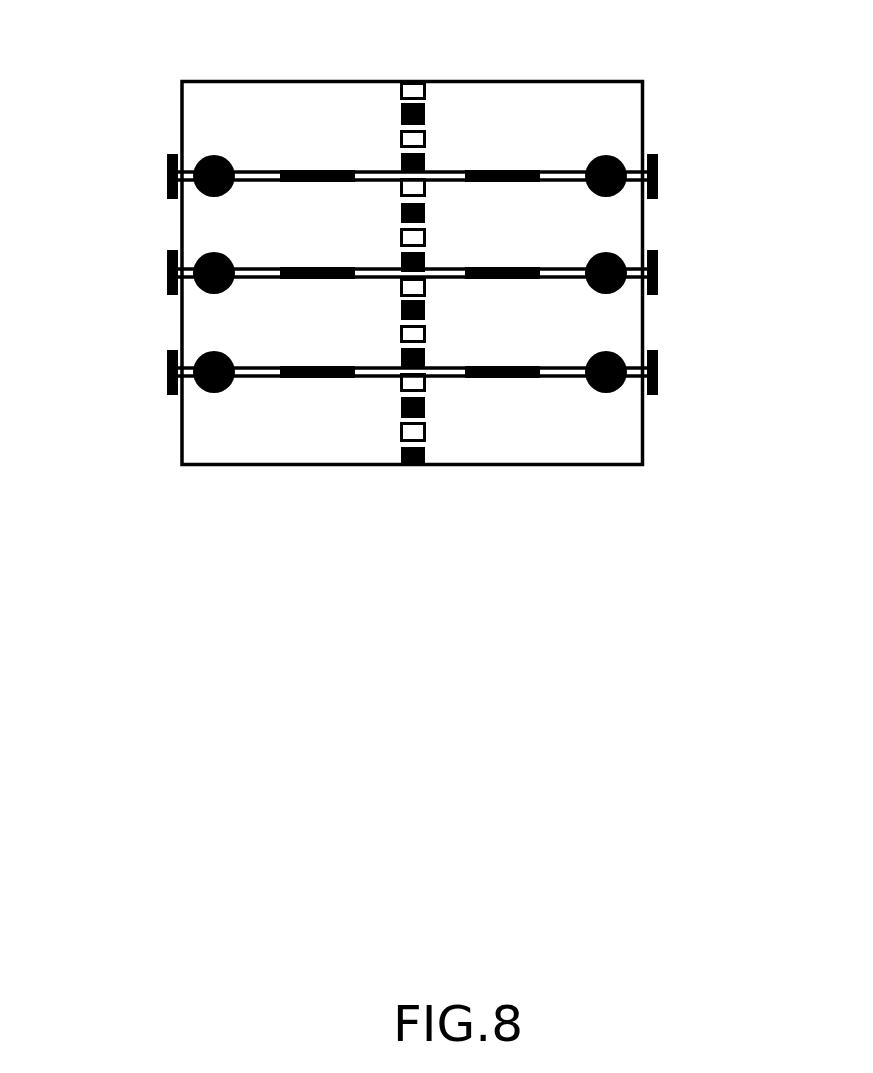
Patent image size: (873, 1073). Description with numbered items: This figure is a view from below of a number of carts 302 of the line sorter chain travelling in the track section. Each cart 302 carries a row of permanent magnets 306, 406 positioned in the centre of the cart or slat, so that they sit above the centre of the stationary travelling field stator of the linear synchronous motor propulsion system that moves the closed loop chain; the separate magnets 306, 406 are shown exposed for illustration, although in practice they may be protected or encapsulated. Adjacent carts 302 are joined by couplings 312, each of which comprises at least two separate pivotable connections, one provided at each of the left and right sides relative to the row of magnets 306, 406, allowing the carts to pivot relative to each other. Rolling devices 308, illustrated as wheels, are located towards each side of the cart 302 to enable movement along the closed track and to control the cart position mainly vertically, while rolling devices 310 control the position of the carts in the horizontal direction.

The sorting cart 302 is at (165, 108).
The permanent magnet 306 is at (400, 108).
The rolling device 308 is at (165, 175).
The rolling device 310 is at (214, 154).
The coupling 312 is at (307, 169).
The permanent magnet 406 is at (427, 90).